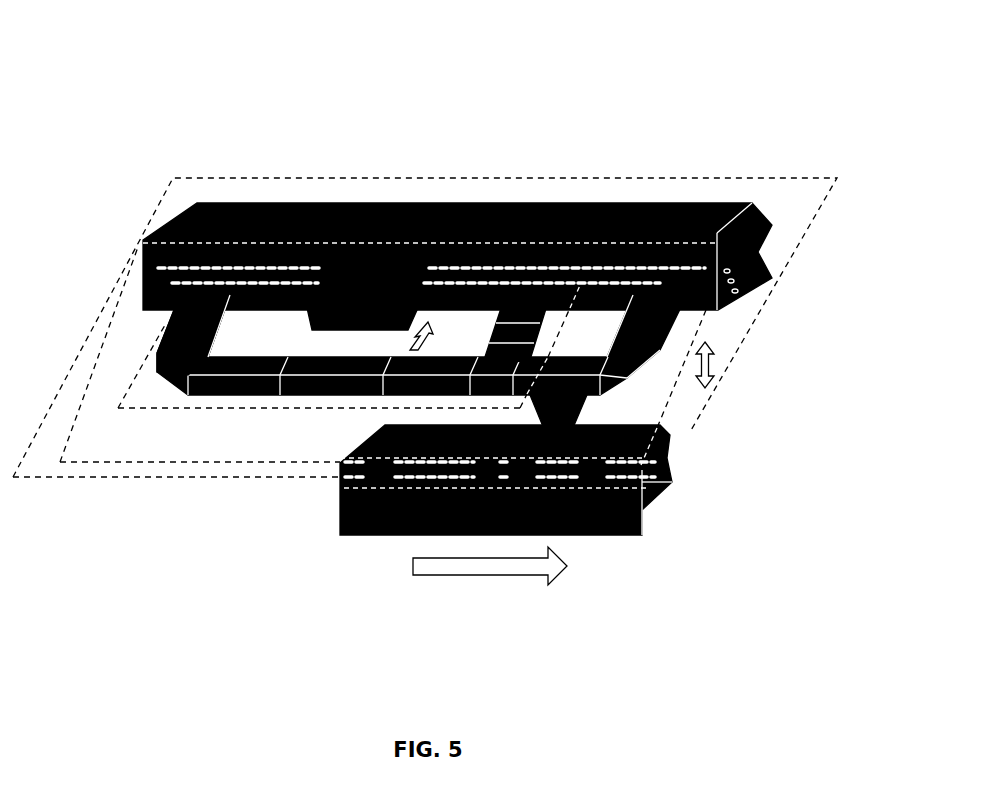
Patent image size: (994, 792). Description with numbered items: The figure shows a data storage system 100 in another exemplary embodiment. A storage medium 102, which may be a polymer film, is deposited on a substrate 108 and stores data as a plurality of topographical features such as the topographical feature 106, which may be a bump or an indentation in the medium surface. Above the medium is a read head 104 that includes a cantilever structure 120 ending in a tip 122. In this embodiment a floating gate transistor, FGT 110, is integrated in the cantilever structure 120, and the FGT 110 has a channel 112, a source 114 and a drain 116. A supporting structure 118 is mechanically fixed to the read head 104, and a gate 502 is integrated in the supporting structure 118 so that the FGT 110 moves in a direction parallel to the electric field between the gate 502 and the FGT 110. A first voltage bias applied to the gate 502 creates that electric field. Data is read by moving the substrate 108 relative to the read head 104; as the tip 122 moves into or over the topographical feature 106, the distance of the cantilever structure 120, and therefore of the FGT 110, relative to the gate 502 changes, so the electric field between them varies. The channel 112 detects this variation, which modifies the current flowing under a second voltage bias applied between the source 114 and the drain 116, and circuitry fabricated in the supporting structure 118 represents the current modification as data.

The data storage system 100 is at (257, 36).
The storage medium 102 is at (610, 452).
The read head 104 is at (167, 193).
The topographical feature 106 is at (600, 473).
The substrate 108 is at (340, 522).
The floating gate transistor (FGT) 110 is at (192, 408).
The channel 112 is at (323, 380).
The source 114 is at (193, 330).
The drain 116 is at (525, 313).
The supporting structure 118 is at (688, 223).
The cantilever structure 120 is at (700, 330).
The tip 122 is at (623, 417).
The gate 502 is at (373, 268).